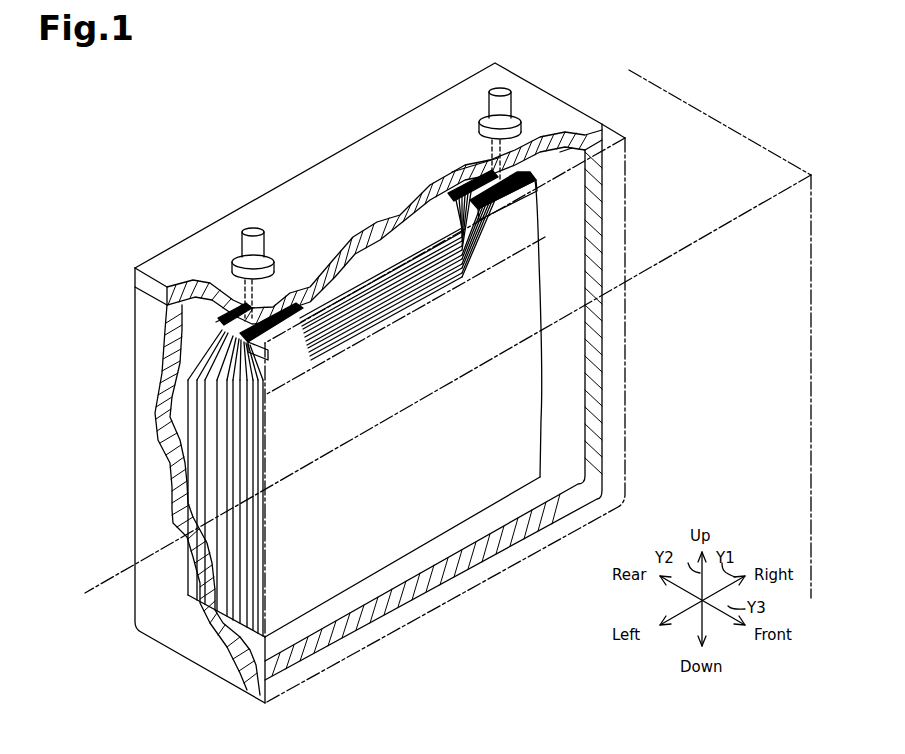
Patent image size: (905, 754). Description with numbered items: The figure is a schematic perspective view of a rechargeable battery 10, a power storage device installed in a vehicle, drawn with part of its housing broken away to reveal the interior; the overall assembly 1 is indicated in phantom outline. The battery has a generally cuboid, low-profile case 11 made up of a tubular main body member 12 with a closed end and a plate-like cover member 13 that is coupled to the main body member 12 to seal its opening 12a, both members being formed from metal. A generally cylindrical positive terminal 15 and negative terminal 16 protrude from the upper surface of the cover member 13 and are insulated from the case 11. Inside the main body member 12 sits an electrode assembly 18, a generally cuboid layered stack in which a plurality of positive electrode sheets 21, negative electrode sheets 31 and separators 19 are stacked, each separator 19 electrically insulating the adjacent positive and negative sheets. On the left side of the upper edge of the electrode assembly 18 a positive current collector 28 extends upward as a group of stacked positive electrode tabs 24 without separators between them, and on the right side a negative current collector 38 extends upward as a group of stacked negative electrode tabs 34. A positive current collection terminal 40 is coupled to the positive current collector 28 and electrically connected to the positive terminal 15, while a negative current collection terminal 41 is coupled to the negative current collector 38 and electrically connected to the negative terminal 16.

The battery 1 is at (811, 248).
The rechargeable battery 10 is at (357, 379).
The case 11 is at (72, 268).
The main body member 12 is at (142, 305).
The opening 12a is at (567, 160).
The cover member 13 is at (140, 278).
The positive terminal 15 is at (253, 230).
The negative terminal 16 is at (497, 89).
The electrode assembly 18 is at (498, 403).
The separator 19 is at (317, 360).
The positive electrode sheet 21 is at (300, 320).
The positive electrode tab 24 is at (283, 276).
The positive current collector 28 is at (318, 396).
The negative electrode sheet 31 is at (528, 205).
The negative electrode tab 34 is at (582, 198).
The negative current collector 38 is at (508, 289).
The positive current collection terminal 40 is at (215, 315).
The negative current collection terminal 41 is at (465, 170).